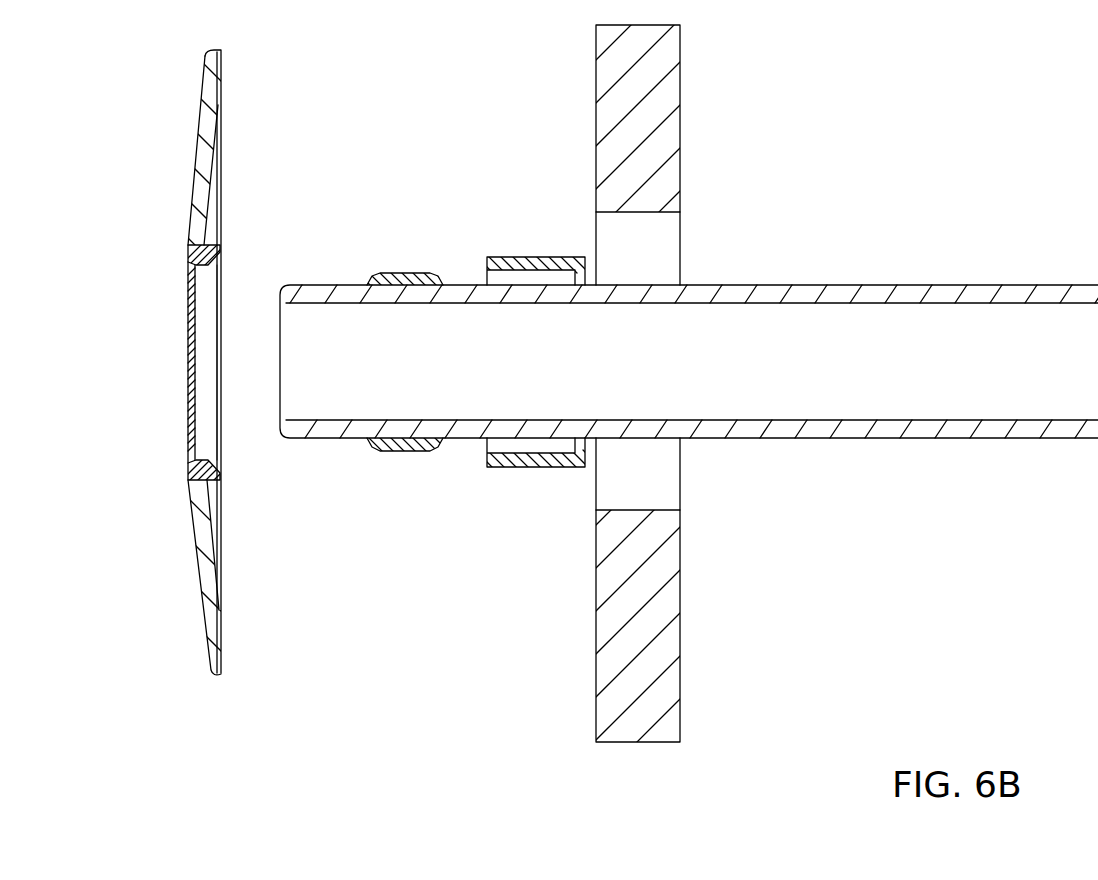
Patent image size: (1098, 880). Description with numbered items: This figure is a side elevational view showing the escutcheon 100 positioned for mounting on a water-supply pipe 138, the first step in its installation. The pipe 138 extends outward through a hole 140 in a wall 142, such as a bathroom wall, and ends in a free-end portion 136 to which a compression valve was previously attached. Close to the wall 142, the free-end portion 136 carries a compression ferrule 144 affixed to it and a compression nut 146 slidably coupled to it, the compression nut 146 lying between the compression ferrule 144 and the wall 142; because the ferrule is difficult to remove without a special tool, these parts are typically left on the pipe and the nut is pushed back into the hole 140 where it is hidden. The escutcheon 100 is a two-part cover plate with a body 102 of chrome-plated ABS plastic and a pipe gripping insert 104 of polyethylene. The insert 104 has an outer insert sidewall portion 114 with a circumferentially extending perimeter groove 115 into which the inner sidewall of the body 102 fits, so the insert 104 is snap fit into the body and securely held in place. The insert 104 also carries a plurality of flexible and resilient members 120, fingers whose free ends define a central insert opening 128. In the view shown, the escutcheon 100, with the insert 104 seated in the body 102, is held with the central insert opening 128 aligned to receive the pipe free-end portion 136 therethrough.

The escutcheon 100 is at (198, 117).
The body 102 is at (197, 570).
The insert 104 is at (188, 474).
The outer insert sidewall portion 114 is at (221, 262).
The perimeter groove 115 is at (206, 234).
The flexible and resilient members 120 is at (190, 395).
The central insert opening 128 is at (212, 325).
The free-end portion 136 is at (333, 430).
The water-supply pipe 138 is at (902, 285).
The hole 140 is at (657, 255).
The wall 142 is at (682, 90).
The compression ferrule 144 is at (405, 273).
The compression nut 146 is at (537, 257).